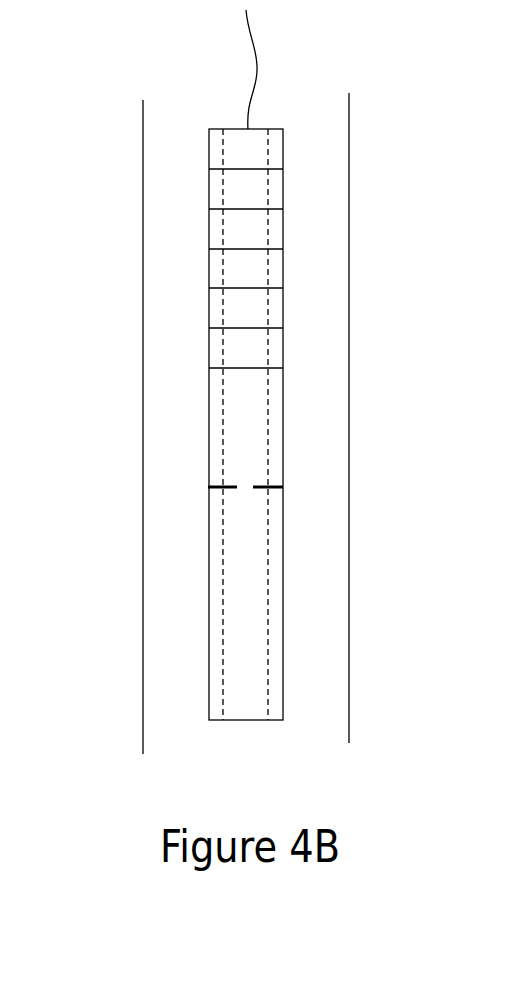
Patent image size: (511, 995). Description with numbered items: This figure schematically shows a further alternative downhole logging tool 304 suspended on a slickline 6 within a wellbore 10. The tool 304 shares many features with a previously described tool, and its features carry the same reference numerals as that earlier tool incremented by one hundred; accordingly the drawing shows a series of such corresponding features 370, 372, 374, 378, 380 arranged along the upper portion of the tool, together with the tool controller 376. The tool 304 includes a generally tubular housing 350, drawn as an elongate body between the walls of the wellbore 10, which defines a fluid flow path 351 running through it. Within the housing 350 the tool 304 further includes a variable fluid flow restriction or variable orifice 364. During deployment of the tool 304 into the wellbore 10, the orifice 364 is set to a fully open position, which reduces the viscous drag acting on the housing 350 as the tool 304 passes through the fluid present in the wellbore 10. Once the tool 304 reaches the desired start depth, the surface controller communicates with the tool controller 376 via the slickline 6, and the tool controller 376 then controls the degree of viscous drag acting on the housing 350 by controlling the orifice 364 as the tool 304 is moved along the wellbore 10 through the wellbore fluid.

The slickline 6 is at (257, 70).
The wellbore 10 is at (349, 172).
The downhole logging tool 304 is at (177, 612).
The tubular housing 350 is at (283, 681).
The fluid flow path 351 is at (222, 423).
The variable orifice 364 is at (247, 487).
The first segment 370 is at (209, 152).
The second segment 372 is at (209, 191).
The third segment 374 is at (209, 231).
The tool controller 376 is at (209, 265).
The fifth segment 378 is at (209, 308).
The sixth segment 380 is at (209, 348).